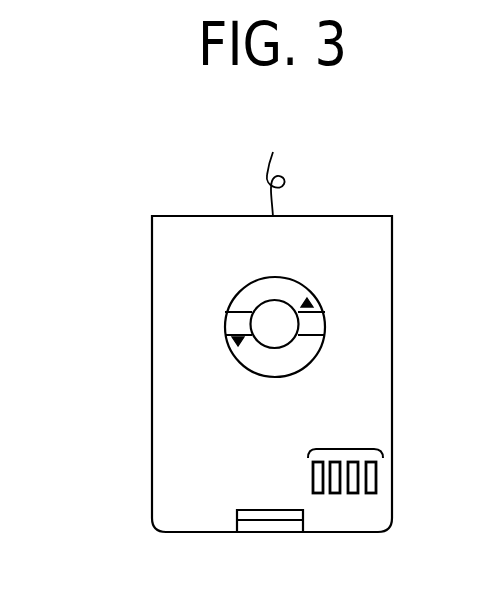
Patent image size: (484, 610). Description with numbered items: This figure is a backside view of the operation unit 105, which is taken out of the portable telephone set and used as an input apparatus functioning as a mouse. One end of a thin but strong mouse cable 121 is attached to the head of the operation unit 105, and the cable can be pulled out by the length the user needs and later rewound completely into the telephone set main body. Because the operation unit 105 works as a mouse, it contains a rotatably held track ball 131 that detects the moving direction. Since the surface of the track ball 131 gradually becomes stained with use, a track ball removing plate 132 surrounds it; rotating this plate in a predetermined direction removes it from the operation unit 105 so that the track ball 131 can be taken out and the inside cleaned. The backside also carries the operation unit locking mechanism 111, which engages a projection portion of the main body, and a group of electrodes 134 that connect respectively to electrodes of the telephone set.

The operation unit 105 is at (168, 425).
The mouse cable 121 is at (267, 163).
The track ball 131 is at (280, 308).
The track ball removing plate 132 is at (265, 357).
The group of electrodes 134 is at (344, 449).
The operation unit locking mechanism 111 is at (258, 509).